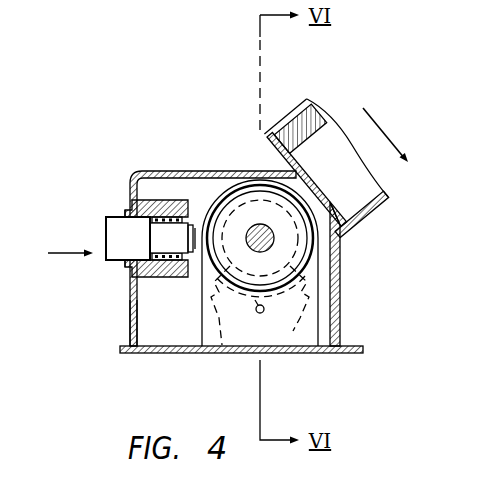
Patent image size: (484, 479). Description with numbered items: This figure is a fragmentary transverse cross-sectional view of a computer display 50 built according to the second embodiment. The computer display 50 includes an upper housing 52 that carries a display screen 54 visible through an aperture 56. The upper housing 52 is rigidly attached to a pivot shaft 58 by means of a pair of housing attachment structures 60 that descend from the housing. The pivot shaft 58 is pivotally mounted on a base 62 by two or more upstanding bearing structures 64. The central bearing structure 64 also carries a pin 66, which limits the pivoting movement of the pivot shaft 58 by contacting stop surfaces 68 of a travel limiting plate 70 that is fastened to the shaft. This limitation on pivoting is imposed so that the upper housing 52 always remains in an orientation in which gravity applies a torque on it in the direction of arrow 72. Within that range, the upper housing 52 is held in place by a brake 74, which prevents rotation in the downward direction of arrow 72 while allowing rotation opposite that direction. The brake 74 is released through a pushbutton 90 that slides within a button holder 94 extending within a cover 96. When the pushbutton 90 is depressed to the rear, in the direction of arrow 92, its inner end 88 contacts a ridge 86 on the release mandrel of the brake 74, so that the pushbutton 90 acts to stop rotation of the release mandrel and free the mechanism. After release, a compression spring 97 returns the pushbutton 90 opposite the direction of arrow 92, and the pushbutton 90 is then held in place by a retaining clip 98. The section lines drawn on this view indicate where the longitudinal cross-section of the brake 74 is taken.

The computer display 50 is at (121, 74).
The upper housing 52 is at (358, 223).
The display screen 54 is at (300, 98).
The aperture 56 is at (292, 110).
The pivot shaft 58 is at (259, 236).
The housing attachment structures 60 is at (341, 238).
The base 62 is at (348, 347).
The bearing structures 64 is at (327, 315).
The pin 66 is at (257, 314).
The stop surfaces 68 is at (200, 345).
The travel limiting plate 70 is at (222, 212).
The arrow 72 is at (383, 120).
The brake 74 is at (213, 148).
The ridge 86 is at (210, 282).
The inner end 88 is at (207, 250).
The pushbutton 90 is at (118, 216).
The arrow 92 is at (72, 252).
The button holder 94 is at (128, 200).
The cover 96 is at (128, 333).
The compression spring 97 is at (166, 199).
The retaining clip 98 is at (150, 200).